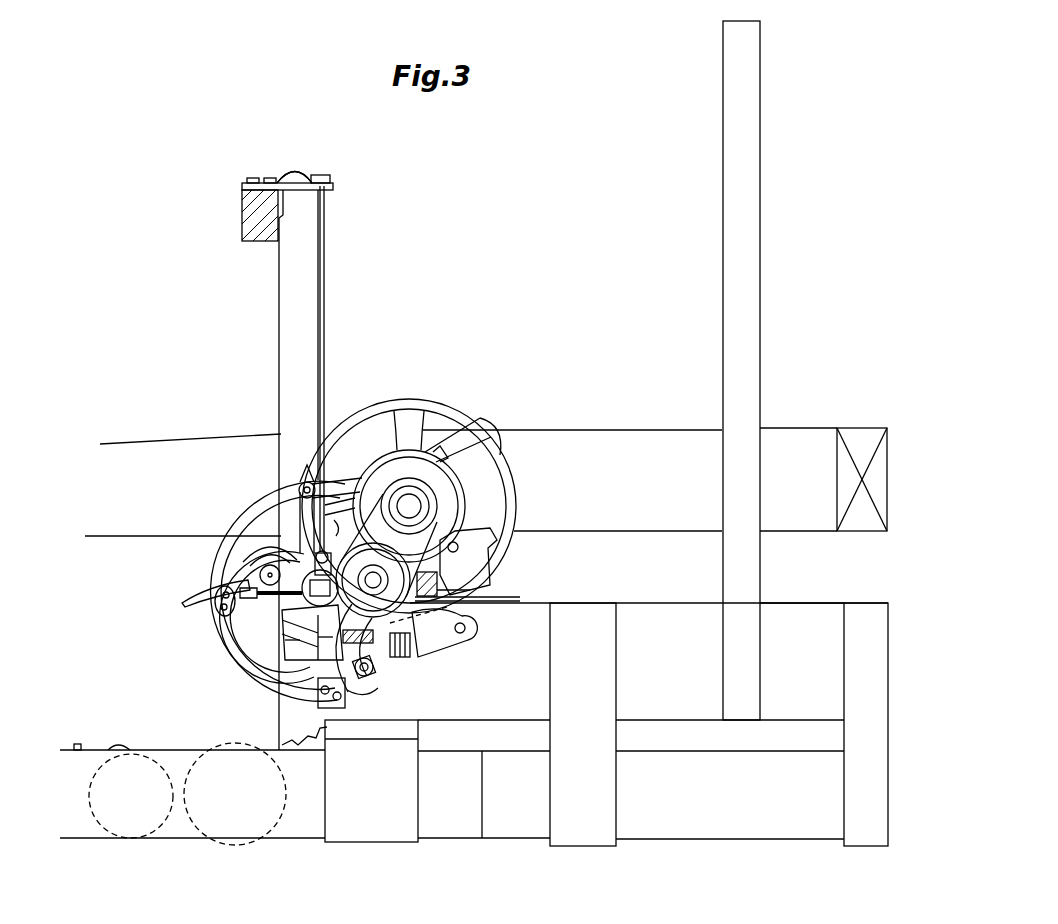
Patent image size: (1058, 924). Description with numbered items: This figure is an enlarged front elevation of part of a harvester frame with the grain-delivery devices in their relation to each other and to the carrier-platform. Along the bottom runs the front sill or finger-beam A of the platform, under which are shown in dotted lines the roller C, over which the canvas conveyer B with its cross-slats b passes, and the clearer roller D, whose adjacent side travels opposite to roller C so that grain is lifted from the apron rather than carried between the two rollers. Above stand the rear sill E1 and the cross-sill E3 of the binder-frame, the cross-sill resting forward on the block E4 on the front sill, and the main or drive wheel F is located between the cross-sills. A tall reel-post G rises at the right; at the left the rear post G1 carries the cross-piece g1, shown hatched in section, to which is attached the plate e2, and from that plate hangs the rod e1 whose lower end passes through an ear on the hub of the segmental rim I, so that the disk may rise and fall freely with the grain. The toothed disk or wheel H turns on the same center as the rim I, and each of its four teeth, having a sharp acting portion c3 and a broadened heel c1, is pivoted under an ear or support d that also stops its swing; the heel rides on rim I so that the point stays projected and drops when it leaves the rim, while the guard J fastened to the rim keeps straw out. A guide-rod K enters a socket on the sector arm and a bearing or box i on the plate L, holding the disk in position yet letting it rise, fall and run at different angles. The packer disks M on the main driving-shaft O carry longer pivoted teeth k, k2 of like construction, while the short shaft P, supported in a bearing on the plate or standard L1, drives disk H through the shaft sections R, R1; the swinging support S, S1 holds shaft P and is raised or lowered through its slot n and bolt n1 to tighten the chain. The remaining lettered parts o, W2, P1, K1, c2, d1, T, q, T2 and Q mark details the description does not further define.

The front sill or finger-beam A is at (451, 794).
The cross-slats b is at (83, 739).
The conveyer B is at (120, 739).
The roller C is at (131, 796).
The roller D is at (235, 794).
The main or drive wheel F is at (649, 724).
The reel-post G is at (741, 370).
The rear post G1 is at (287, 461).
The cross-piece g1 is at (242, 212).
The rear sill E1 is at (461, 482).
The cross-sill E3 is at (862, 479).
The block E4 is at (802, 579).
The rod e1 is at (329, 374).
The plate e2 is at (274, 181).
The packers M is at (409, 495).
The teeth k is at (465, 430).
The main driving-shaft O is at (445, 493).
The hub o is at (420, 500).
The lug W'' W2 is at (449, 452).
The swinging support S is at (386, 593).
The short shaft P is at (373, 580).
The eccentric pin P1 is at (380, 580).
The slot n is at (382, 690).
The bolt n1 is at (378, 670).
The swinging support S1 is at (433, 632).
The plate or standard L1 is at (375, 634).
The bearing or box i is at (430, 584).
The guide-rod K is at (468, 561).
The teeth k2 is at (460, 548).
The plate L is at (467, 588).
The bracket K' K1 is at (460, 590).
The ear or support d is at (304, 478).
The arm c'' c2 is at (298, 490).
The toothed disk or wheel H is at (278, 591).
The guard J is at (232, 650).
The acting portion of tooth c3 is at (215, 590).
The bracket d' d1 is at (216, 604).
The heel of tooth c1 is at (270, 566).
The shaft T is at (271, 587).
The bearing q is at (310, 592).
The shaft section R is at (308, 551).
The segmental rim or flange I is at (313, 656).
The shaft section R1 is at (295, 630).
The part T'' T2 is at (323, 627).
The part Q is at (340, 526).